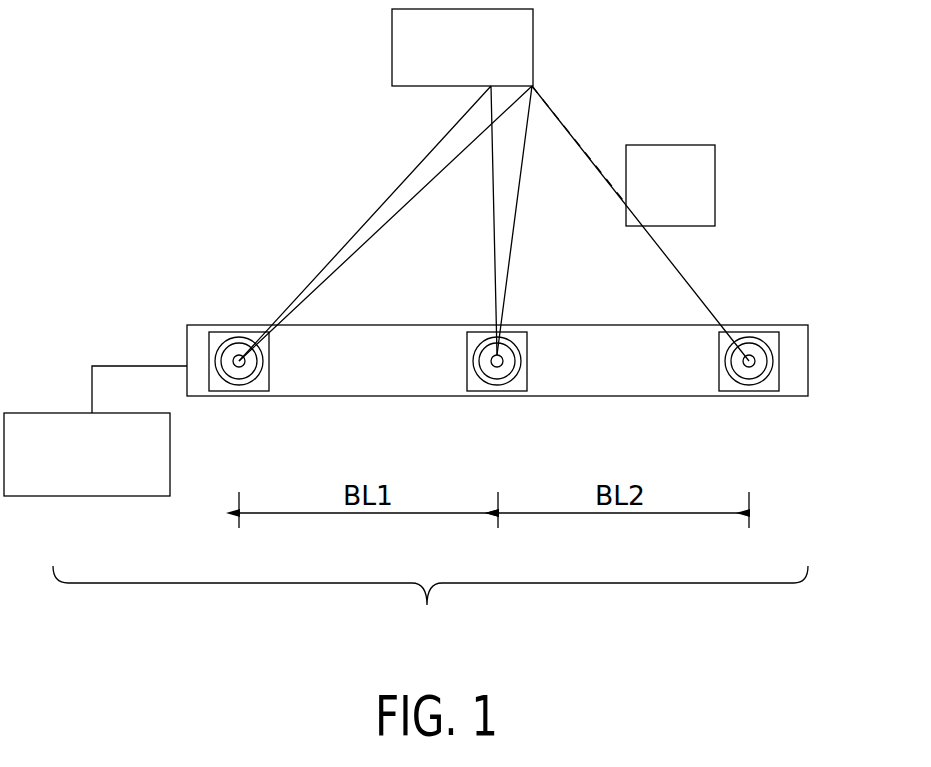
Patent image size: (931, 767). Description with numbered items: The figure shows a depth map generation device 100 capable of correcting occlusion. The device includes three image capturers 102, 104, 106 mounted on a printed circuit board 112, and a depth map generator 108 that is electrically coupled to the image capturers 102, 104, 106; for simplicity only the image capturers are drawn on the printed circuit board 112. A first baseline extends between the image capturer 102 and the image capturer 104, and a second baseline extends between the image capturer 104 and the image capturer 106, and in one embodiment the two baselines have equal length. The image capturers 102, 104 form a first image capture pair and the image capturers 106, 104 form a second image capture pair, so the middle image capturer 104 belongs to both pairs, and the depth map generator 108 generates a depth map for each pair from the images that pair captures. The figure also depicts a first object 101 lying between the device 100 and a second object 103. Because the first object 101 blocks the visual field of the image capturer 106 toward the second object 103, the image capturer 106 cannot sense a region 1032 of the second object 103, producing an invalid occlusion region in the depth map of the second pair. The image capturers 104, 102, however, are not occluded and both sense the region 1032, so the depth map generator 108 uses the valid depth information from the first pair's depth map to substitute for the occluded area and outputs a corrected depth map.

The depth map generation device 100 is at (430, 605).
The first object 101 is at (715, 192).
The image capturer 102 is at (220, 392).
The second object 103 is at (533, 43).
The region of the second object 1032 is at (532, 86).
The image capturer 104 is at (512, 392).
The image capturer 106 is at (770, 392).
The depth map generator 108 is at (92, 496).
The printed circuit board 112 is at (808, 362).